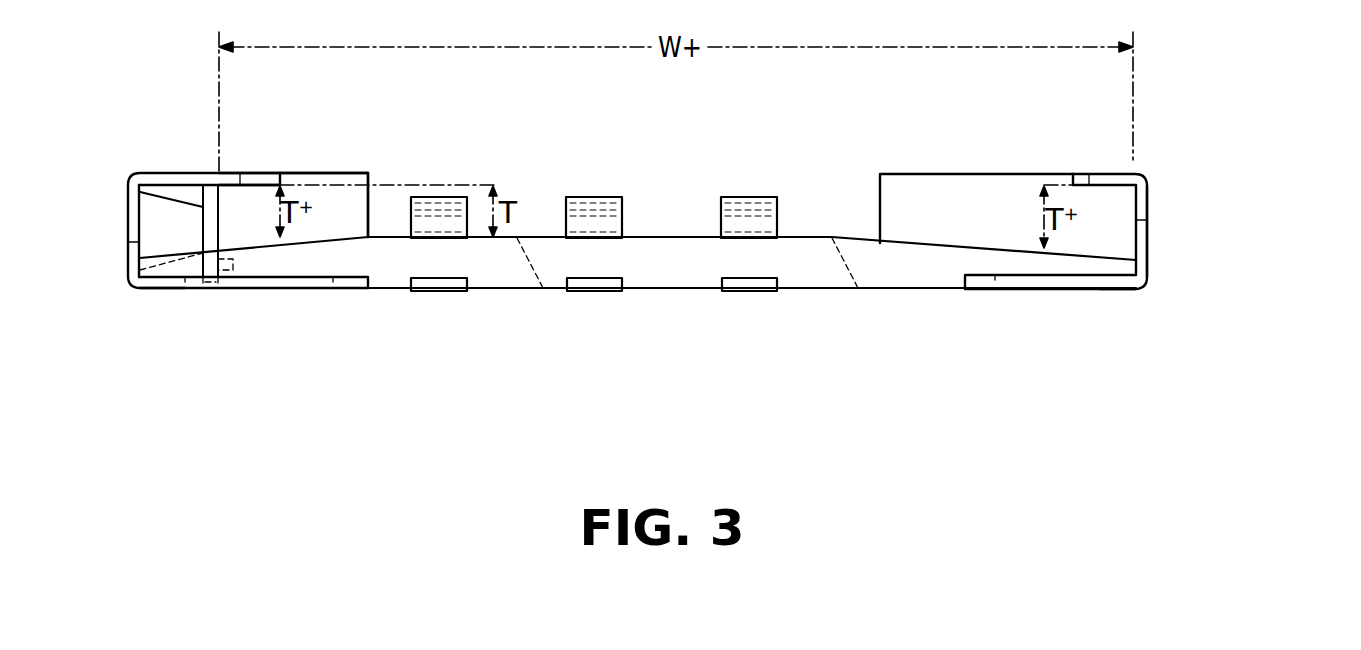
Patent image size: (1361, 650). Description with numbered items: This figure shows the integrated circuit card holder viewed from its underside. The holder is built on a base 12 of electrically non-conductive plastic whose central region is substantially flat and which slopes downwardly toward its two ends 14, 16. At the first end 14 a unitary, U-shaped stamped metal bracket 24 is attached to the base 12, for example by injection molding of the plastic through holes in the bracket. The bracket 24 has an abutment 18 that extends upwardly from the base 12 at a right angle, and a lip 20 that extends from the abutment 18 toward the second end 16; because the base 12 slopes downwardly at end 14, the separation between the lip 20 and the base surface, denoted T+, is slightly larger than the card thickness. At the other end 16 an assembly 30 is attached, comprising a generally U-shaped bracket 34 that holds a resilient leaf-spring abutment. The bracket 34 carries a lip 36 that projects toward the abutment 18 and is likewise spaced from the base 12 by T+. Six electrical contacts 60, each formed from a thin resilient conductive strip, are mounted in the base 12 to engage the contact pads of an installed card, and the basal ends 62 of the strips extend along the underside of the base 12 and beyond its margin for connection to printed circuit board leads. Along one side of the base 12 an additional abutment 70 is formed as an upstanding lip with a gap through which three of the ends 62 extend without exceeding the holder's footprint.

The base 12 is at (822, 238).
The first end of base 14 is at (1256, 231).
The second end of base 16 is at (86, 229).
The abutment 18 is at (1148, 208).
The lip 20 is at (1103, 174).
The U-shaped bracket 24 is at (1143, 289).
The assembly 30 is at (112, 173).
The bracket 34 is at (145, 290).
The lip 36 is at (255, 173).
The electrical contacts 60 is at (750, 197).
The basal end of strip 62 is at (750, 291).
The abutment 70 is at (335, 187).